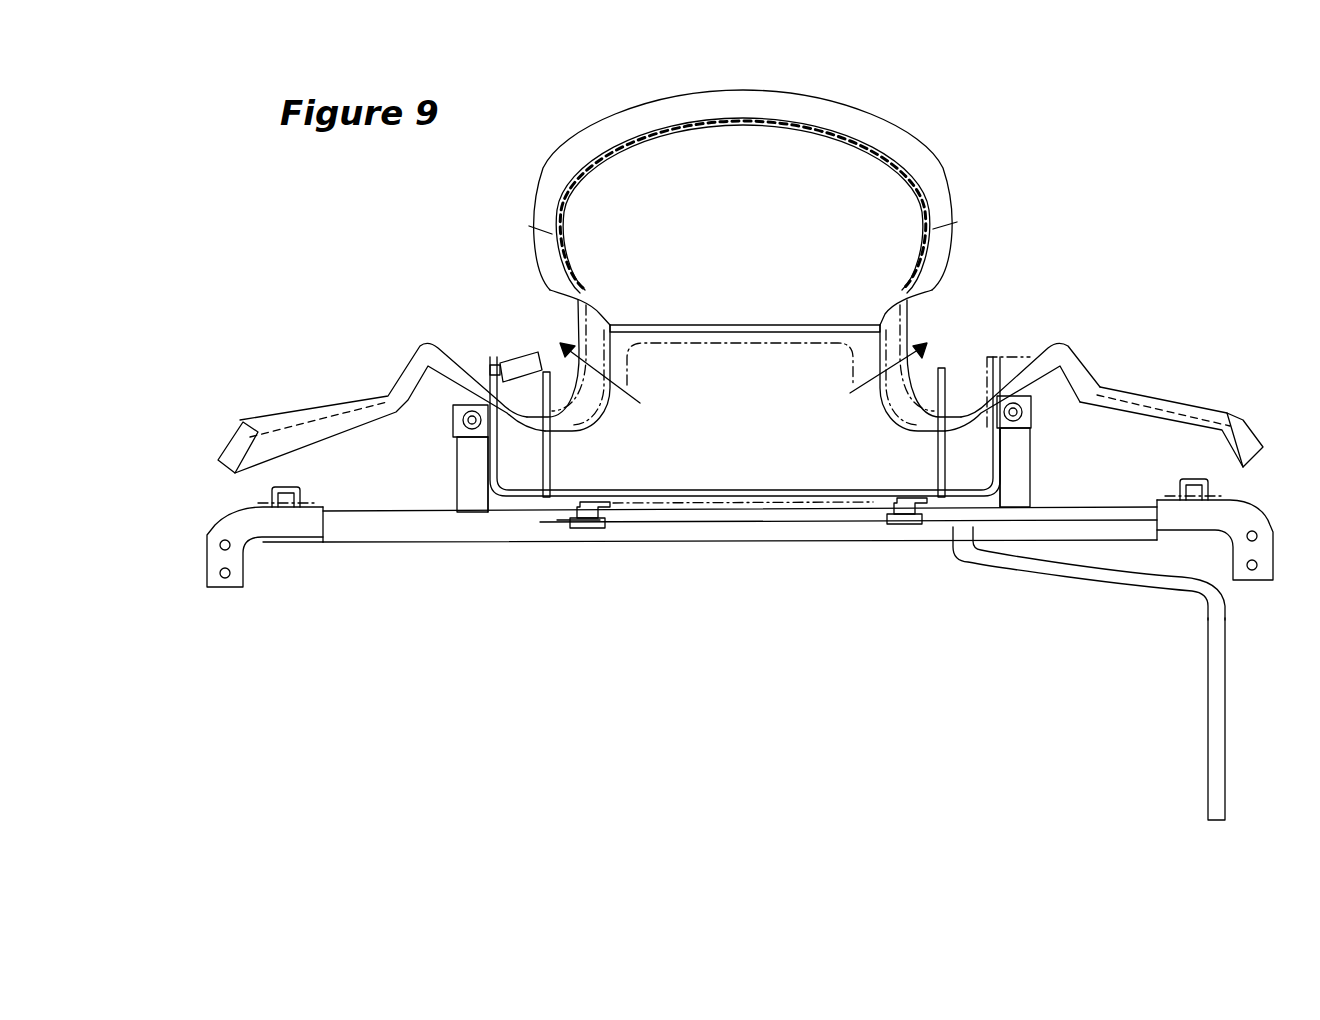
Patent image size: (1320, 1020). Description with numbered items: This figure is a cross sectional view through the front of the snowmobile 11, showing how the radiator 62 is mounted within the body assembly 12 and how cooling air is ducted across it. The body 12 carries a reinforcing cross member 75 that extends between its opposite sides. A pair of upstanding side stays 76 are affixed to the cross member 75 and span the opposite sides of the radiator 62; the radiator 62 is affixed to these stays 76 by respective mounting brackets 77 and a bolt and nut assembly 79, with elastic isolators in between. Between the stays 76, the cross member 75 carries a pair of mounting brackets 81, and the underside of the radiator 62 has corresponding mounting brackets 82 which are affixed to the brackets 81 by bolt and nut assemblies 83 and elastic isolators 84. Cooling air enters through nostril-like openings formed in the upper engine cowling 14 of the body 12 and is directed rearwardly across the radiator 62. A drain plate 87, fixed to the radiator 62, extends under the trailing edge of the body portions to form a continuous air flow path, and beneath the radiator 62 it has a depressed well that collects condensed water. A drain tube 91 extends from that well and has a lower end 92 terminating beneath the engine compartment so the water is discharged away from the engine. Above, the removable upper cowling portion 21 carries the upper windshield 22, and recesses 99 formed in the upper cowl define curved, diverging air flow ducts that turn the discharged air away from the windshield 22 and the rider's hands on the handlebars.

The snowmobile 11 is at (814, 632).
The body assembly 12 is at (1177, 393).
The upper engine cowling 14 is at (1098, 365).
The upper cowling portion 21 is at (968, 240).
The upper windshield 22 is at (796, 115).
The radiator 62 is at (697, 392).
The reinforcing cross member 75 is at (793, 533).
The upstanding side stays 76 is at (456, 482).
The mounting brackets 77 is at (512, 428).
The bolt and nut assembly 79 is at (463, 420).
The mounting brackets 81 is at (607, 523).
The mounting brackets 82 is at (612, 503).
The bolt and nut assemblies 83 is at (590, 495).
The elastic isolators 84 is at (575, 508).
The drain plate 87 is at (557, 522).
The drain tube 91 is at (1085, 580).
The lower end 92 is at (1208, 752).
The recesses 99 is at (573, 302).